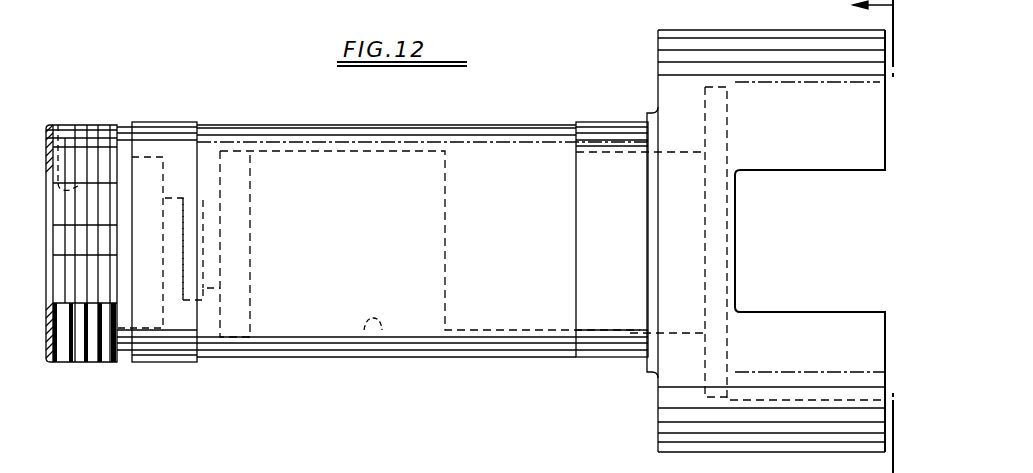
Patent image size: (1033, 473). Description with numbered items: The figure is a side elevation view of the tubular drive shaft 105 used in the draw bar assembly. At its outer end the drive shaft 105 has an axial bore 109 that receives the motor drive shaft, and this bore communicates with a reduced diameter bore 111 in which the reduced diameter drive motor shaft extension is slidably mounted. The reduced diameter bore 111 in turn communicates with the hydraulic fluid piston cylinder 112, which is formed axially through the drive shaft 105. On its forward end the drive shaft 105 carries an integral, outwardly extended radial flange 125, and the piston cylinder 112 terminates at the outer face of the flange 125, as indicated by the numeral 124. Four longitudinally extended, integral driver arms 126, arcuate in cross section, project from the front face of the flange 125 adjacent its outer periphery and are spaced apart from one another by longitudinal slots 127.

The drive shaft 105 is at (250, 350).
The axial bore 109 is at (68, 120).
The reduced diameter bore 111 is at (203, 290).
The hydraulic fluid piston cylinder 112 is at (376, 332).
The termination of piston cylinder 124 is at (707, 297).
The radial flange 125 is at (675, 135).
The driver arms 126 is at (853, 157).
The longitudinal slots 127 is at (795, 312).